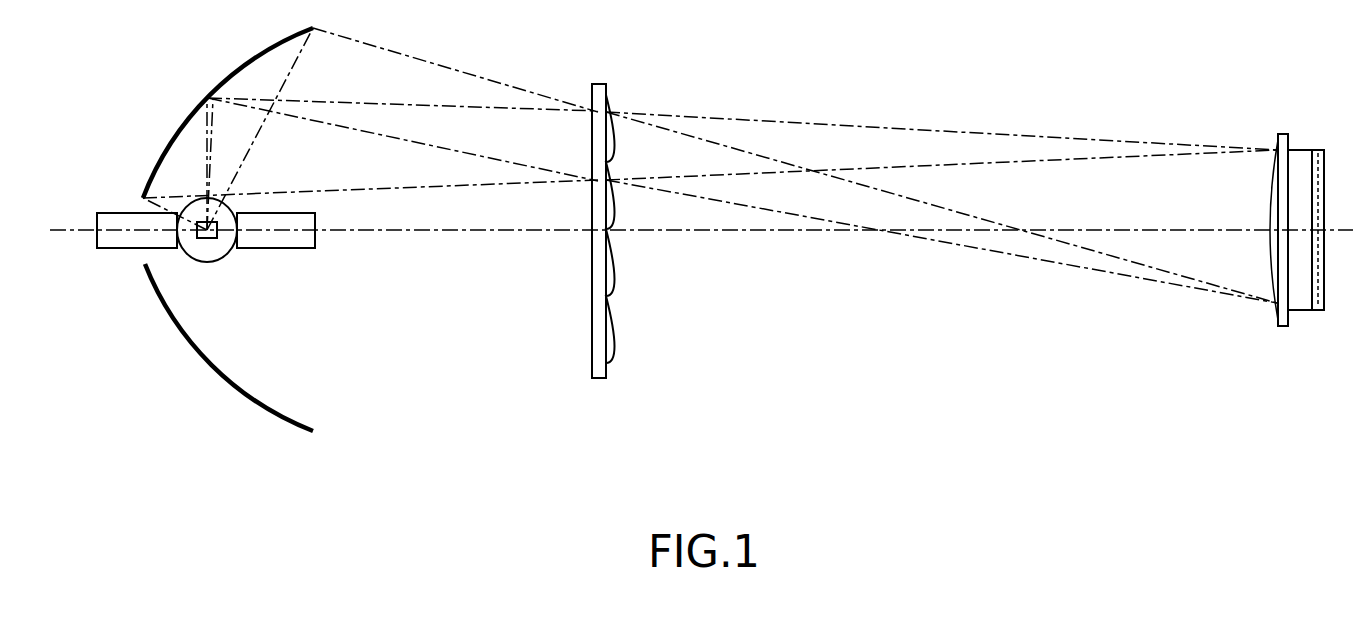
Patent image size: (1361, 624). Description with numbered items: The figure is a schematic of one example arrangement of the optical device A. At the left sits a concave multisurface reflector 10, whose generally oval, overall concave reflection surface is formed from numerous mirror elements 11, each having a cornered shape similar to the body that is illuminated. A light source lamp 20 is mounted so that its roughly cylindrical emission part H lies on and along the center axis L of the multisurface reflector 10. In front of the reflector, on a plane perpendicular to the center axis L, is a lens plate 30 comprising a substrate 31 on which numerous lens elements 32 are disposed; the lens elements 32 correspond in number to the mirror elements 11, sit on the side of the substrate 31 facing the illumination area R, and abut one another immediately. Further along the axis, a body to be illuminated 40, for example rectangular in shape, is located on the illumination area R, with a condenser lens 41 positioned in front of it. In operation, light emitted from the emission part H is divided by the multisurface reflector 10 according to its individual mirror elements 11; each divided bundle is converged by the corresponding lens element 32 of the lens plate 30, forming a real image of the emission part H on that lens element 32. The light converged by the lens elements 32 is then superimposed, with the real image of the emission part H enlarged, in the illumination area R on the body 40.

The multisurface reflector 10 is at (180, 98).
The mirror element 11 is at (200, 353).
The light source lamp 20 is at (305, 250).
The emission part H is at (207, 240).
The center axis L is at (63, 228).
The lens plate 30 is at (603, 201).
The substrate 31 is at (592, 303).
The lens element 32 is at (614, 265).
The body to be illuminated 40 is at (1316, 150).
The condenser lens 41 is at (1283, 133).
The illumination area R is at (1317, 288).
The optical device A is at (442, 413).